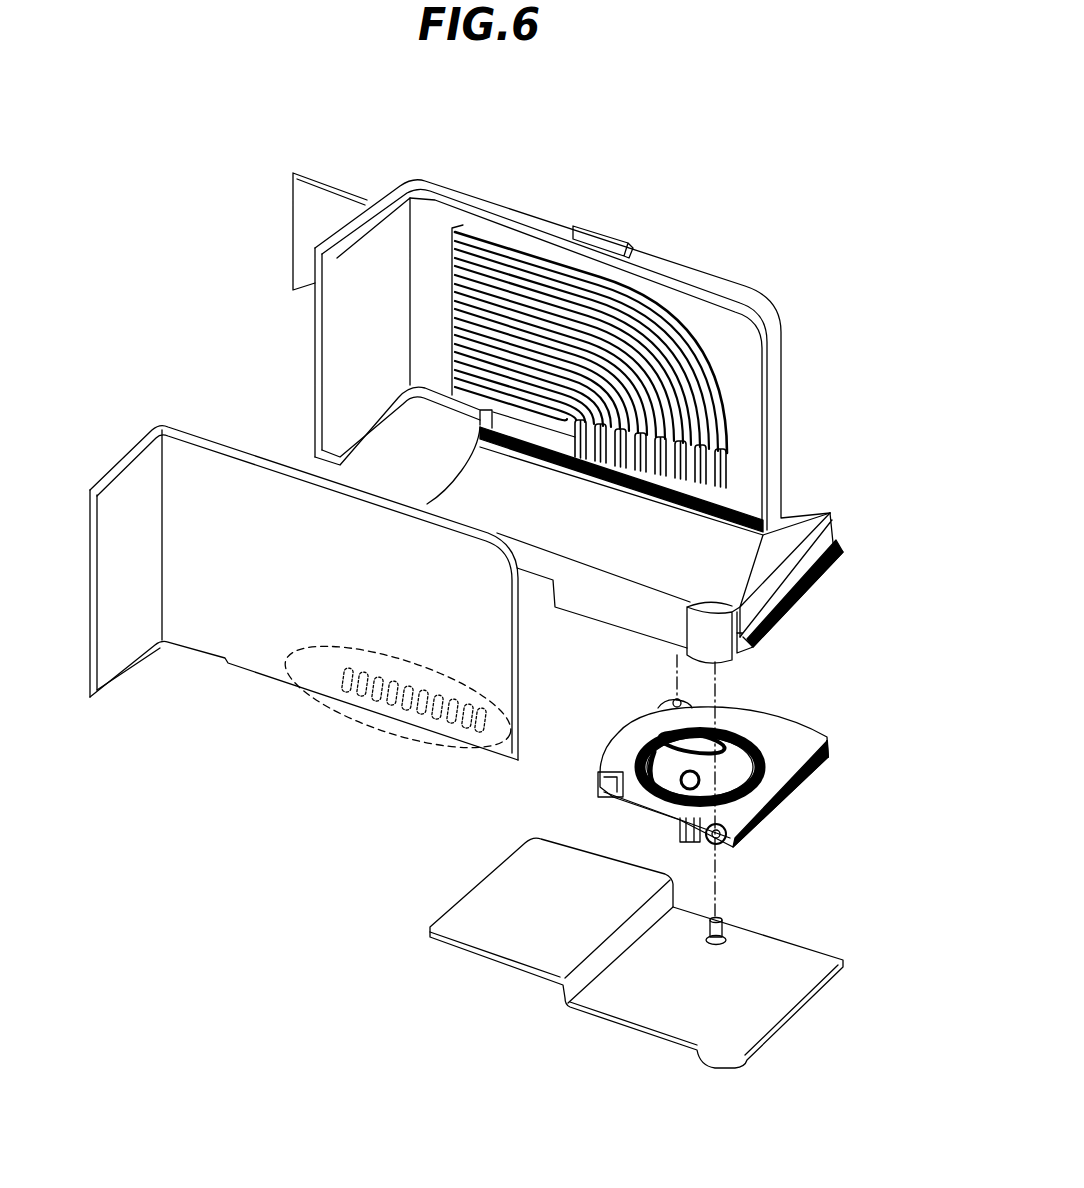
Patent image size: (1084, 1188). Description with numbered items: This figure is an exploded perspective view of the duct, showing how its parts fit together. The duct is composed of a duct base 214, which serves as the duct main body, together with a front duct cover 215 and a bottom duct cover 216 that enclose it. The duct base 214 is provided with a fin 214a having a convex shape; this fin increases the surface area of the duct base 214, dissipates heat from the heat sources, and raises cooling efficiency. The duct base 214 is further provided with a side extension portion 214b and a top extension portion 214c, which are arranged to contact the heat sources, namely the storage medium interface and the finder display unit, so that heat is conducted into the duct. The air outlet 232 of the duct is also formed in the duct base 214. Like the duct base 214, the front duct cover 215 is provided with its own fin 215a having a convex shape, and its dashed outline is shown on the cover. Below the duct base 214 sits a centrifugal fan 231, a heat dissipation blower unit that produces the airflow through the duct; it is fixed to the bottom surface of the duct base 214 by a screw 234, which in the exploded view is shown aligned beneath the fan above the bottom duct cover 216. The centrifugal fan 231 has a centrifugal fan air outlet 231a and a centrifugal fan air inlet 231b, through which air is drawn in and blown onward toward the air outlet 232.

The duct base 214 is at (697, 264).
The fin 214a is at (502, 247).
The side extension portion 214b is at (302, 218).
The top extension portion 214c is at (604, 238).
The front duct cover 215 is at (223, 622).
The fin 215a is at (357, 728).
The bottom duct cover 216 is at (500, 935).
The centrifugal fan 231 is at (778, 740).
The centrifugal fan air outlet 231a is at (797, 795).
The centrifugal fan air inlet 231b is at (680, 742).
The air outlet 232 is at (817, 583).
The screw 234 is at (716, 947).